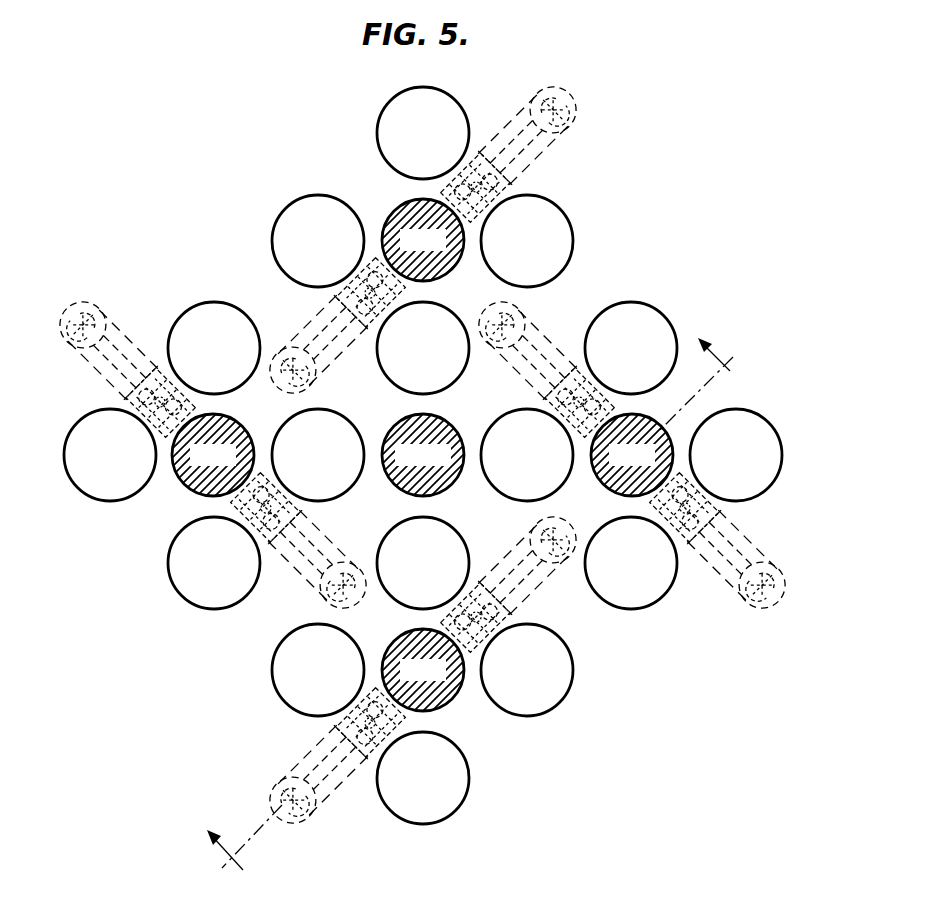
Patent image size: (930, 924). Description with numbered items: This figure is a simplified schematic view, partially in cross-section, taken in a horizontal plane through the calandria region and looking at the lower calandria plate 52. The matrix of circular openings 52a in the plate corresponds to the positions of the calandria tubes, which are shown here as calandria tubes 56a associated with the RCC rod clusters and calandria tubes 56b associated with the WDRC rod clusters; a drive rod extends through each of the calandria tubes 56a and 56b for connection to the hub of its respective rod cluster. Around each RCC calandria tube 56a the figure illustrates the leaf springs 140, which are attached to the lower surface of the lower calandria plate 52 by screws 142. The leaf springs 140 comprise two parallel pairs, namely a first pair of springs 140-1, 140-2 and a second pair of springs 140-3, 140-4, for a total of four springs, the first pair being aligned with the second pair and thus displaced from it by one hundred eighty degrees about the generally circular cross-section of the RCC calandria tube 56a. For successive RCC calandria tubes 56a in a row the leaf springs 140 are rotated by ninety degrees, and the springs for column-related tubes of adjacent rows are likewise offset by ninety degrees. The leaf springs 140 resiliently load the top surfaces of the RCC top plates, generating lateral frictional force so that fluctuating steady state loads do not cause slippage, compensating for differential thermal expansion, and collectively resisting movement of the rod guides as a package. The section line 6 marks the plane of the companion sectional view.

The lower calandria plate 52 is at (423, 455).
The fuel rod 52a is at (388, 161).
The RCC calandria tube 56a is at (183, 477).
The WDRC calandria tube 56b is at (396, 429).
The leaf spring 140 is at (423, 455).
The leaf spring of first pair 140-1 is at (762, 585).
The leaf spring of first pair 140-2 is at (714, 537).
The leaf spring of second pair 140-3 is at (580, 403).
The leaf spring of second pair 140-4 is at (523, 346).
The screw 142 is at (632, 455).
The section line 6- 6 is at (470, 594).